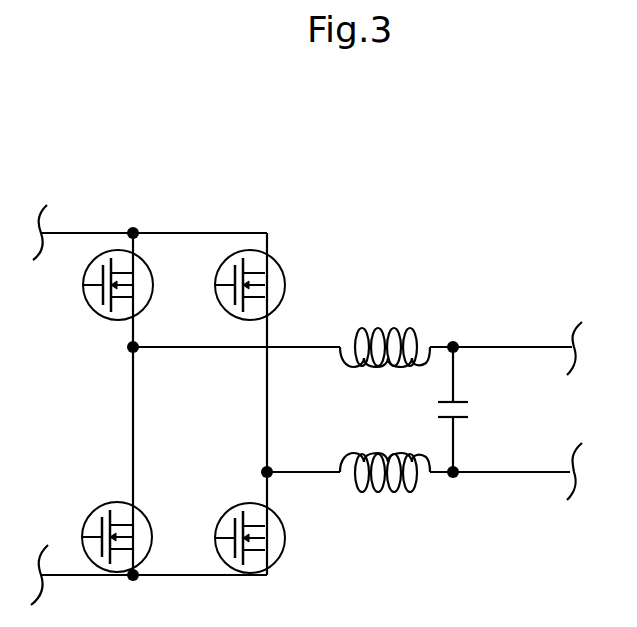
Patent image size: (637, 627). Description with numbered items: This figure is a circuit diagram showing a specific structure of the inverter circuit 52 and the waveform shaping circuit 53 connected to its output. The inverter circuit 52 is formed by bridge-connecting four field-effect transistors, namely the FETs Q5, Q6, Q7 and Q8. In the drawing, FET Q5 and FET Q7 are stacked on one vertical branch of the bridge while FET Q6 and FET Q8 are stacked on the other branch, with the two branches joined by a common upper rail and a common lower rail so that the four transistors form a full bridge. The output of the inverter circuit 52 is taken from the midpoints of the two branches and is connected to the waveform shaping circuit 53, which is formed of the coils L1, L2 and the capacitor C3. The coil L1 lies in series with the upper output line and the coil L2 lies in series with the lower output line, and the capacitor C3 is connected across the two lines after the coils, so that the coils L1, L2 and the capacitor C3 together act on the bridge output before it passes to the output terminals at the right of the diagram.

The inverter circuit 52 is at (200, 226).
The waveform shaping circuit 53 is at (400, 302).
The FET Q5 is at (96, 312).
The FET Q6 is at (216, 292).
The FET Q7 is at (92, 512).
The FET Q8 is at (228, 506).
The coil L1 is at (371, 367).
The coil L2 is at (376, 493).
The capacitor C3 is at (470, 410).